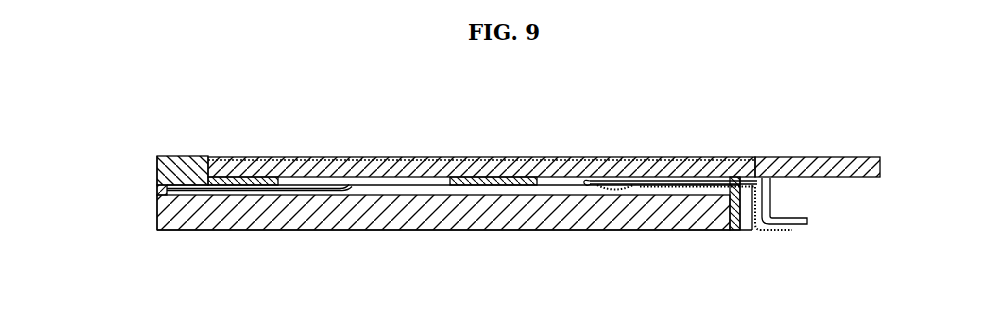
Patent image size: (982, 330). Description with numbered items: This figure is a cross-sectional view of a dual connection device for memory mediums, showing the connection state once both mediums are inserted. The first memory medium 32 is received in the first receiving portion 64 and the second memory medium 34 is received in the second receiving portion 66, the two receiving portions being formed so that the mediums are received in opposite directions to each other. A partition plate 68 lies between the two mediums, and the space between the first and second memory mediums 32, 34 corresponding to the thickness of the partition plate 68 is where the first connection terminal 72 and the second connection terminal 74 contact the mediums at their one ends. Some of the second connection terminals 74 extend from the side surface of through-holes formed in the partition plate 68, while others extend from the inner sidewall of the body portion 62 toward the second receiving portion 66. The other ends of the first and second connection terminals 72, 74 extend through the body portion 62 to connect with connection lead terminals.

The first memory medium 32 is at (200, 230).
The second memory medium 34 is at (237, 160).
The body portion 62 is at (179, 156).
The first receiving portion 64 is at (134, 200).
The second receiving portion 66 is at (772, 140).
The partition plate 68 is at (494, 157).
The first connection terminal 72 is at (597, 192).
The second connection terminal 74 is at (345, 187).